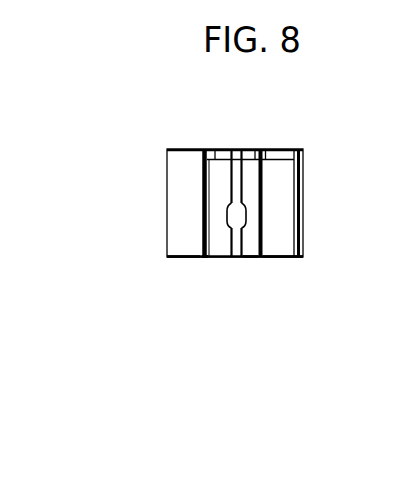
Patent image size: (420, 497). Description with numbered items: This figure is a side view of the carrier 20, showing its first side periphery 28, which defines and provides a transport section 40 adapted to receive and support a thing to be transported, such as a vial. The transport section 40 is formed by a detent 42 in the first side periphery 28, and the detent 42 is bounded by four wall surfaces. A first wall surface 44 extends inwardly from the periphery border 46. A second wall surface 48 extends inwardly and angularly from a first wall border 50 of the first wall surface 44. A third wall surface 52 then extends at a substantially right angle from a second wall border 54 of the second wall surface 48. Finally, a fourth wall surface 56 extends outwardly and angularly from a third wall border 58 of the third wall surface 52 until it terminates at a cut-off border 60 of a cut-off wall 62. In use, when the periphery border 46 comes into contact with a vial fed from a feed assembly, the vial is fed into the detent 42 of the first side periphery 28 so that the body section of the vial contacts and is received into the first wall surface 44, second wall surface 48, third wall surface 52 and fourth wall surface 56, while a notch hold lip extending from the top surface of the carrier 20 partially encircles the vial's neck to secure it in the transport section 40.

The carrier 20 is at (182, 200).
The first side periphery 28 is at (160, 296).
The transport section 40 is at (290, 321).
The detent 42 is at (320, 304).
The first wall surface 44 is at (169, 311).
The periphery border 46 is at (148, 224).
The second wall surface 48 is at (208, 131).
The first wall border 50 is at (133, 203).
The third wall surface 52 is at (284, 169).
The second wall border 54 is at (205, 163).
The fourth wall surface 56 is at (323, 222).
The third wall border 58 is at (301, 170).
The cut-off border 60 is at (325, 203).
The cut-off wall 62 is at (322, 202).